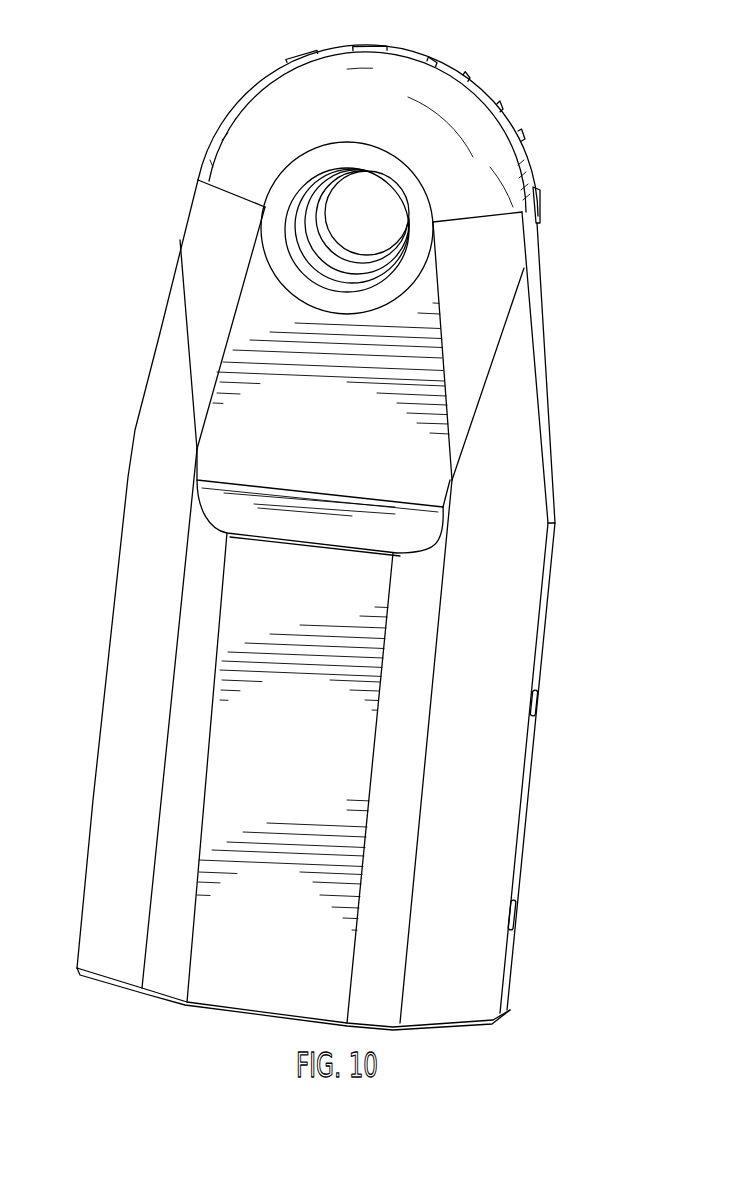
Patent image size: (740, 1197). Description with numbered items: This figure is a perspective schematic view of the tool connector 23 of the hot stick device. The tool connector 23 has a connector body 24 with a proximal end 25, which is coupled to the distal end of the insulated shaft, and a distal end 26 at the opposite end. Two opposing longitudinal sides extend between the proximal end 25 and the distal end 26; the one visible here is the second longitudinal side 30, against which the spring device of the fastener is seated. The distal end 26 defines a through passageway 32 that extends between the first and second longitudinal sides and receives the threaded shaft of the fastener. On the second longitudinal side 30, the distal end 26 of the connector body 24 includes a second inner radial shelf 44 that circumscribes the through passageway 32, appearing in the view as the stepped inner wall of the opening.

The tool connector 23 is at (572, 141).
The connector body 24 is at (581, 489).
The proximal end 25 is at (480, 902).
The distal end 26 is at (498, 283).
The second longitudinal side 30 is at (243, 440).
The through passageway 32 is at (362, 217).
The second inner radial shelf 44 is at (328, 247).